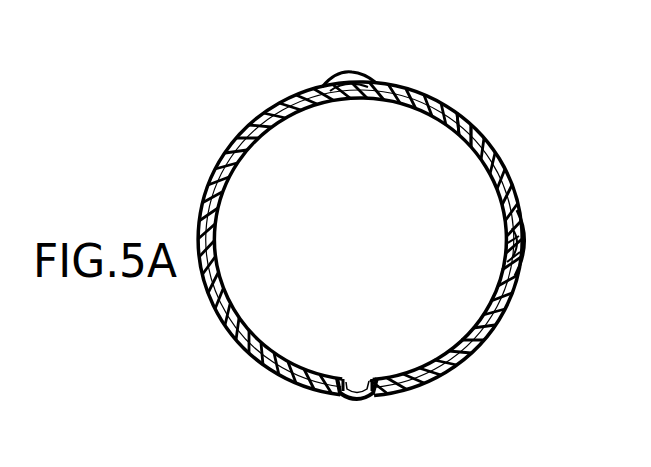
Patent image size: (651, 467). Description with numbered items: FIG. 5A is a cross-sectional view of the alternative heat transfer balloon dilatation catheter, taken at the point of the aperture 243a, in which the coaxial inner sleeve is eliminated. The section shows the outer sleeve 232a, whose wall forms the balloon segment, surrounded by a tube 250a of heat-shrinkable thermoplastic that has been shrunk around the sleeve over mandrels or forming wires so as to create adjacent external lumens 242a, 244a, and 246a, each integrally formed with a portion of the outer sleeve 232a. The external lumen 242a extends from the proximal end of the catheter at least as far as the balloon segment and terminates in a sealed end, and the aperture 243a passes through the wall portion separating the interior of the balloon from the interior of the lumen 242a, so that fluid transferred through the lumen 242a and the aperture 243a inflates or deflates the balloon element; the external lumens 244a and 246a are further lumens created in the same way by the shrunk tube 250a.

The outer sleeve 232a is at (250, 168).
The external lumen 244a is at (370, 84).
The tube 250a is at (472, 121).
The external lumen 246a is at (529, 238).
The aperture 243a is at (353, 375).
The external lumen 242a is at (368, 400).